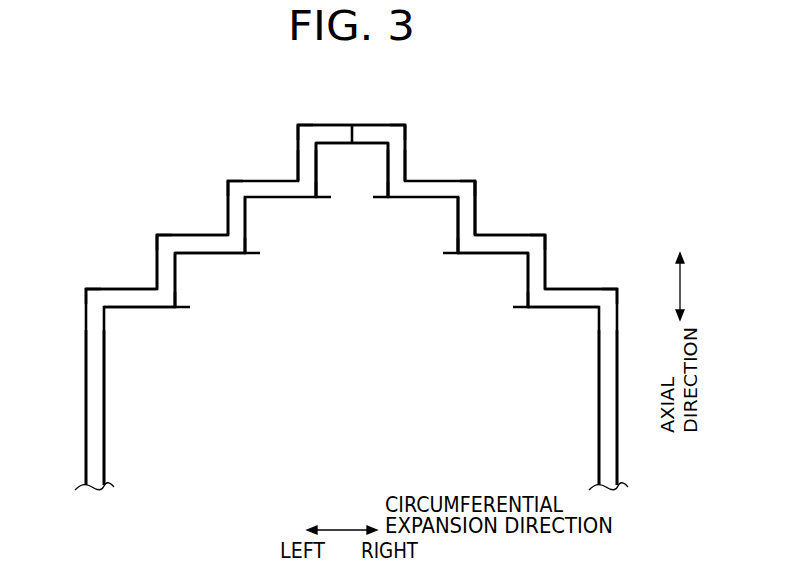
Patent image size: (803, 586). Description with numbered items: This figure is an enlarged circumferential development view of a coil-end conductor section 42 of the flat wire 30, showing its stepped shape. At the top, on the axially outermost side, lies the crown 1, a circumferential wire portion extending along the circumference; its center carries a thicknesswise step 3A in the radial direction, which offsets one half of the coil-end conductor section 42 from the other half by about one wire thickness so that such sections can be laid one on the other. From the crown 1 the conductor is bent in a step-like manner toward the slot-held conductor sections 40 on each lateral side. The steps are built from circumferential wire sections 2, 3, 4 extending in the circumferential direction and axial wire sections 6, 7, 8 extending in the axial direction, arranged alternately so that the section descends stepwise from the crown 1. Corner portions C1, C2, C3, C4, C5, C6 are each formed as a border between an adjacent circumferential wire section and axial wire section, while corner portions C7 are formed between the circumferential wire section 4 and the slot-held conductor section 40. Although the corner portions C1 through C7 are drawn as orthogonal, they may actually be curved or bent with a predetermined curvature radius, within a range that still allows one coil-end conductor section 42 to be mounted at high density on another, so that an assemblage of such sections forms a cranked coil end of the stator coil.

The crown 1 is at (337, 133).
The circumferential wire section 2 is at (271, 188).
The circumferential wire section 3 is at (201, 242).
The thicknesswise step 3A is at (353, 134).
The circumferential wire section 4 is at (131, 295).
The axial wire section 6 is at (308, 160).
The axial wire section 7 is at (238, 220).
The axial wire section 8 is at (170, 275).
The flat wire 30 is at (51, 340).
The slot-held conductor section 40 is at (95, 443).
The coil-end conductor section 42 is at (532, 162).
The corner portion C1 is at (308, 133).
The corner portion C2 is at (307, 190).
The corner portion C3 is at (238, 187).
The corner portion C4 is at (237, 245).
The corner portion C5 is at (167, 238).
The corner portion C6 is at (167, 300).
The corner portion C7 is at (97, 295).